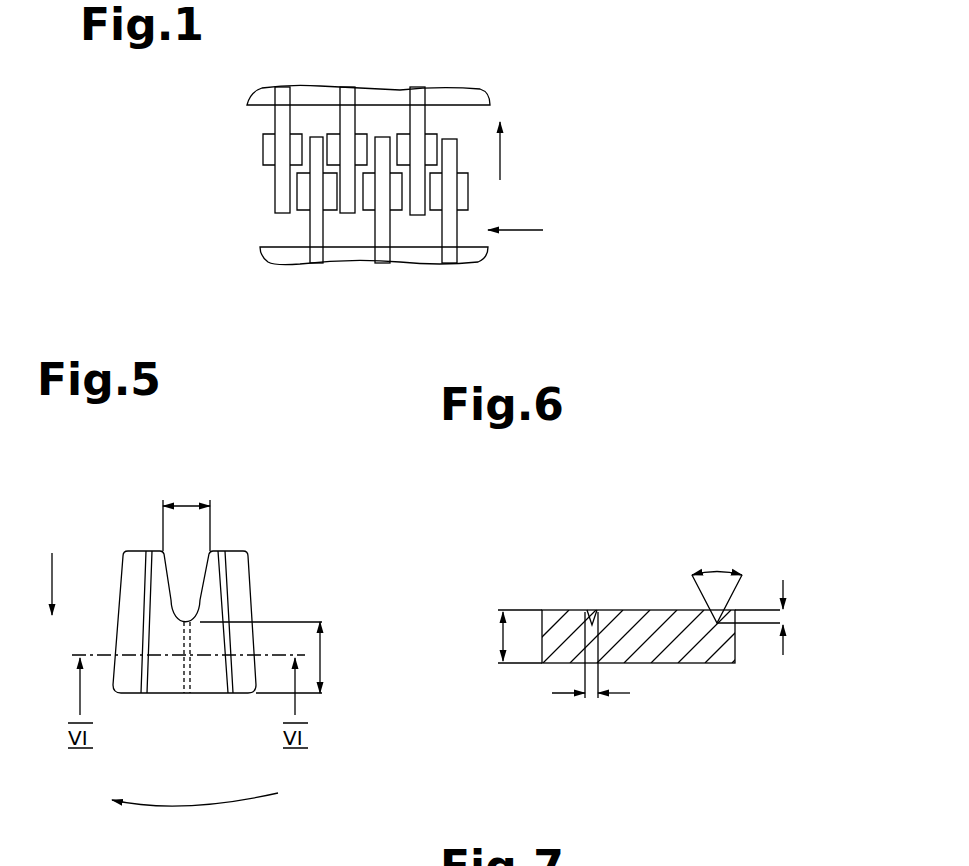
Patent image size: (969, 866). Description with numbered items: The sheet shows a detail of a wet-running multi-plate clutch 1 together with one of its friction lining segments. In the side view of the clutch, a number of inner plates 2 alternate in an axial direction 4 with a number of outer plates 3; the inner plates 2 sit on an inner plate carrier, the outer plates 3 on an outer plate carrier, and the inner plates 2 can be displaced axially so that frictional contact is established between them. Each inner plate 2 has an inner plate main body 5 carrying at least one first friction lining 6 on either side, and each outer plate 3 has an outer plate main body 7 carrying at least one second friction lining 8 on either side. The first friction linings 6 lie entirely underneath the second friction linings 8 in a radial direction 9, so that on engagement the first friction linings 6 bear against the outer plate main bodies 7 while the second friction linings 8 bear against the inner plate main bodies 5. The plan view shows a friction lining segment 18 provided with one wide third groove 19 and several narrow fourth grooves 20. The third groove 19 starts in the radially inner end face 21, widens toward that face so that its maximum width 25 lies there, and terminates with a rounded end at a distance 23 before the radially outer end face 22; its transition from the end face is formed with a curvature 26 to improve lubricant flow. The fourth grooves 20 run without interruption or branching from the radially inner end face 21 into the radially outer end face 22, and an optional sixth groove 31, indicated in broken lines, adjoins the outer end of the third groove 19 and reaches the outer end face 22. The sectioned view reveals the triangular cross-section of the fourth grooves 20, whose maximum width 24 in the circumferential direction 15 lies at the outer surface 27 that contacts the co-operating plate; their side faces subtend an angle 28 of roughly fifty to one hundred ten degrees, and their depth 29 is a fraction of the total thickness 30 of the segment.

In FIG. 1, the multi-plate clutch 1 is at (504, 107).
In FIG. 1, the inner plate 2 is at (290, 236).
In FIG. 1, the outer plate 3 is at (262, 118).
In FIG. 1, the axial direction 4 is at (537, 222).
In FIG. 1, the inner plate main body 5 is at (312, 267).
In FIG. 1, the first friction lining 6 is at (333, 221).
In FIG. 1, the outer plate main body 7 is at (285, 93).
In FIG. 1, the second friction lining 8 is at (366, 123).
In FIG. 1, the radial direction 9 is at (510, 148).
In FIG. 5, the radial direction 9 is at (46, 590).
In FIG. 5, the circumferential direction 15 is at (238, 812).
In FIG. 5, the friction lining segment 18 is at (270, 582).
In FIG. 6, the friction lining segment 18 is at (740, 553).
In FIG. 5, the third groove 19 is at (207, 554).
In FIG. 5, the fourth grooves 20 is at (147, 544).
In FIG. 6, the fourth grooves 20 is at (590, 600).
In FIG. 5, the radially inner end face 21 is at (135, 547).
In FIG. 5, the radially outer end face 22 is at (143, 697).
In FIG. 5, the distance 23 is at (332, 660).
In FIG. 6, the maximum width 24 is at (591, 705).
In FIG. 5, the maximum width 25 is at (188, 503).
In FIG. 5, the curvature 26 is at (195, 557).
In FIG. 6, the outer surface 27 is at (562, 607).
In FIG. 6, the angle 28 is at (718, 565).
In FIG. 6, the depth 29 is at (797, 617).
In FIG. 6, the total thickness 30 is at (494, 635).
In FIG. 5, the sixth groove 31 is at (196, 675).
In FIG. 6, the sixth groove 31 is at (647, 598).